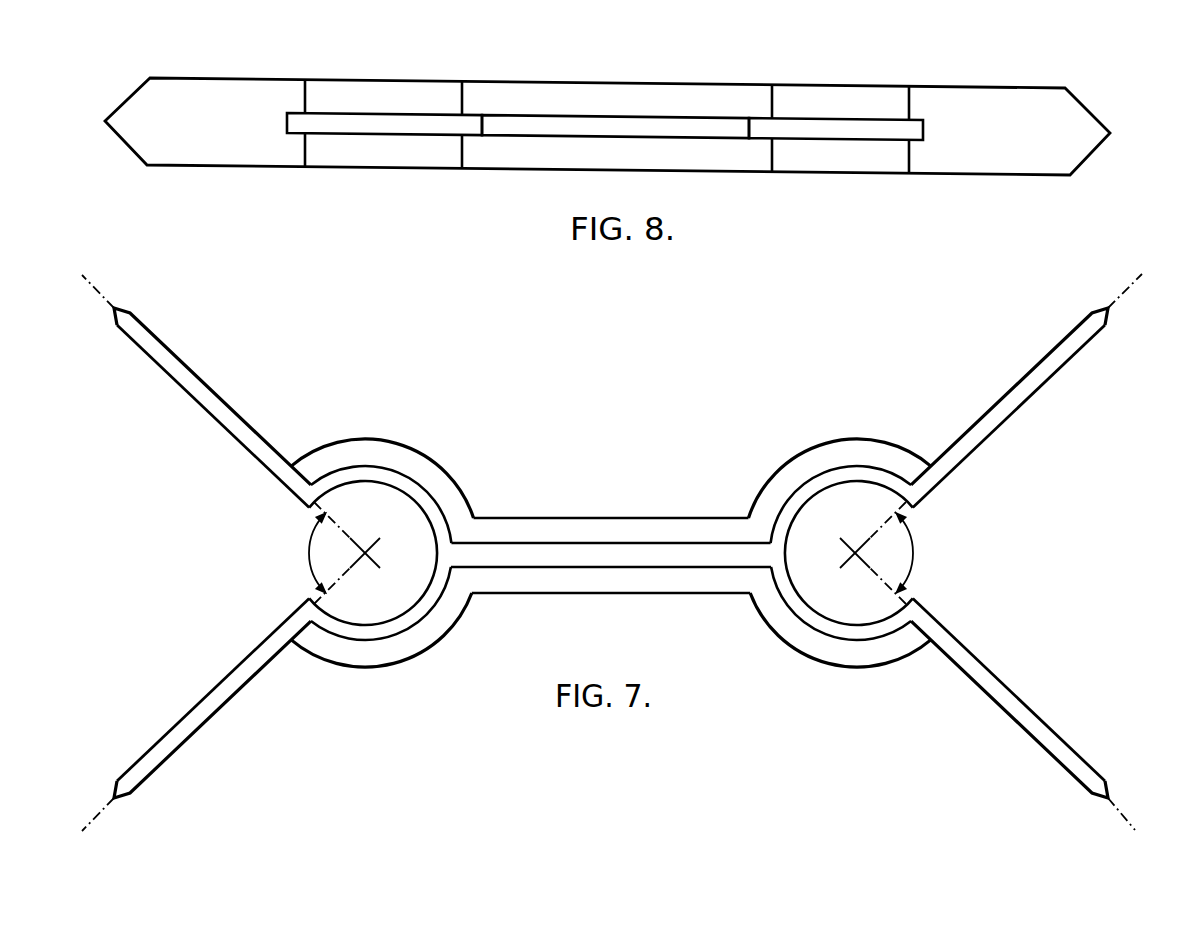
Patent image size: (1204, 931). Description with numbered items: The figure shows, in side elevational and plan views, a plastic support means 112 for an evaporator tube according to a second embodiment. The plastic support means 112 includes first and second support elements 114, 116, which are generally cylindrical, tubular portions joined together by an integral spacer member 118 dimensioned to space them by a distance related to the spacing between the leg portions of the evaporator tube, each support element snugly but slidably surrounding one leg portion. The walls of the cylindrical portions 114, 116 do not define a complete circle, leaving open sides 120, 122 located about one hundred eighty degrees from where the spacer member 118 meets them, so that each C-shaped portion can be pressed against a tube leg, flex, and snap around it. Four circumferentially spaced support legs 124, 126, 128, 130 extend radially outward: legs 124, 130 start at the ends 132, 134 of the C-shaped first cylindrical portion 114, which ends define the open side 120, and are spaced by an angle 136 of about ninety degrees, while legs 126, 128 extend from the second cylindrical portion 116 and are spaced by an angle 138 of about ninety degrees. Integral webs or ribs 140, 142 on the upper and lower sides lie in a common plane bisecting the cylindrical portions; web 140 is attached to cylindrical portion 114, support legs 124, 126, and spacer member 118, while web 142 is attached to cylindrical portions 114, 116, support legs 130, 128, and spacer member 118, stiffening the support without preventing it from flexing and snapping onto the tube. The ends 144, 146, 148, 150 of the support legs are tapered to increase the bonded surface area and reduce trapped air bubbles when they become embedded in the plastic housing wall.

In FIG. 8, the plastic support means 112 is at (647, 39).
In FIG. 7, the plastic support means 112 is at (648, 648).
In FIG. 8, the first support element 114 is at (415, 93).
In FIG. 7, the first support element 114 is at (423, 488).
In FIG. 8, the second support element 116 is at (862, 104).
In FIG. 7, the second support element 116 is at (800, 485).
In FIG. 8, the spacer member 118 is at (703, 98).
In FIG. 7, the spacer member 118 is at (618, 543).
In FIG. 7, the open side 120 is at (290, 548).
In FIG. 7, the open side 122 is at (915, 533).
In FIG. 7, the support leg 124 is at (192, 371).
In FIG. 7, the support leg 126 is at (1047, 357).
In FIG. 7, the support leg 128 is at (1045, 727).
In FIG. 7, the support leg 130 is at (187, 714).
In FIG. 7, the end of C-shaped configuration 132 is at (284, 527).
In FIG. 7, the end of C-shaped configuration 134 is at (298, 601).
In FIG. 7, the angle 136 is at (300, 565).
In FIG. 7, the angle 138 is at (910, 557).
In FIG. 8, the web 140 is at (542, 123).
In FIG. 7, the web 140 is at (538, 528).
In FIG. 7, the web 142 is at (563, 582).
In FIG. 7, the end of support leg 144 is at (114, 308).
In FIG. 7, the end of support leg 146 is at (1108, 308).
In FIG. 7, the end of support leg 148 is at (1108, 798).
In FIG. 7, the end of support leg 150 is at (114, 798).